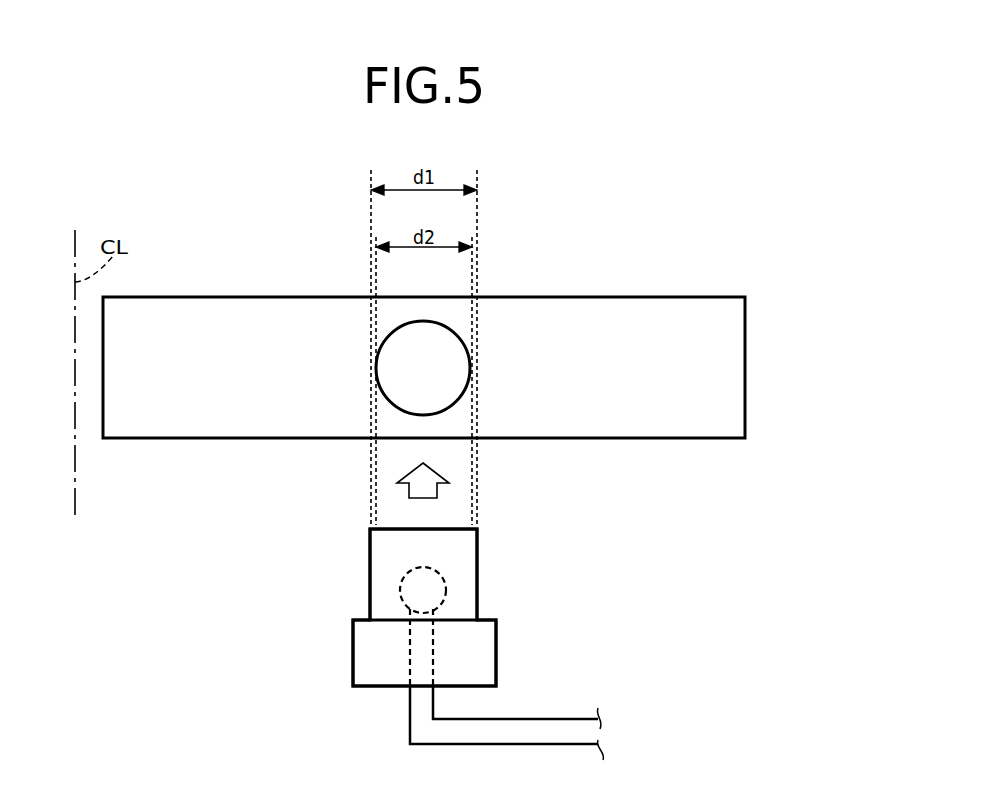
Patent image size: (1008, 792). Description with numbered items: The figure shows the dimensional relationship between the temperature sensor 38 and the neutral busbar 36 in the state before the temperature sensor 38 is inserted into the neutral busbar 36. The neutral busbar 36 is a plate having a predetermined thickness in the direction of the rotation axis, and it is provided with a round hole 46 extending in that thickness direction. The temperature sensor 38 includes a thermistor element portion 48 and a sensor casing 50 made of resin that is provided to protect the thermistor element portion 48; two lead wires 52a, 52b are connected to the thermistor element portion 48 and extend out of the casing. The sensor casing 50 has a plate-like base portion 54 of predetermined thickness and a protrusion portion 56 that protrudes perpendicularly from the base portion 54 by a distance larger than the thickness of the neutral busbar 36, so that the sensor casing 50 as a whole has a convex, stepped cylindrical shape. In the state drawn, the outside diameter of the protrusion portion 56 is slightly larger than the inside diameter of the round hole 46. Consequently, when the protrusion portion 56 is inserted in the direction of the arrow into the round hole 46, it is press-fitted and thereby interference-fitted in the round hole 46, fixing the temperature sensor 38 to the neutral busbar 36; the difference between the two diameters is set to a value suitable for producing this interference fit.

The neutral busbar 36 is at (609, 310).
The round hole 46 is at (462, 397).
The temperature sensor 38 is at (290, 616).
The sensor casing 50 is at (370, 597).
The protrusion portion 56 is at (462, 557).
The base portion 54 is at (370, 667).
The thermistor element portion 48 is at (423, 590).
The lead wire 52a is at (551, 718).
The lead wire 52b is at (495, 745).